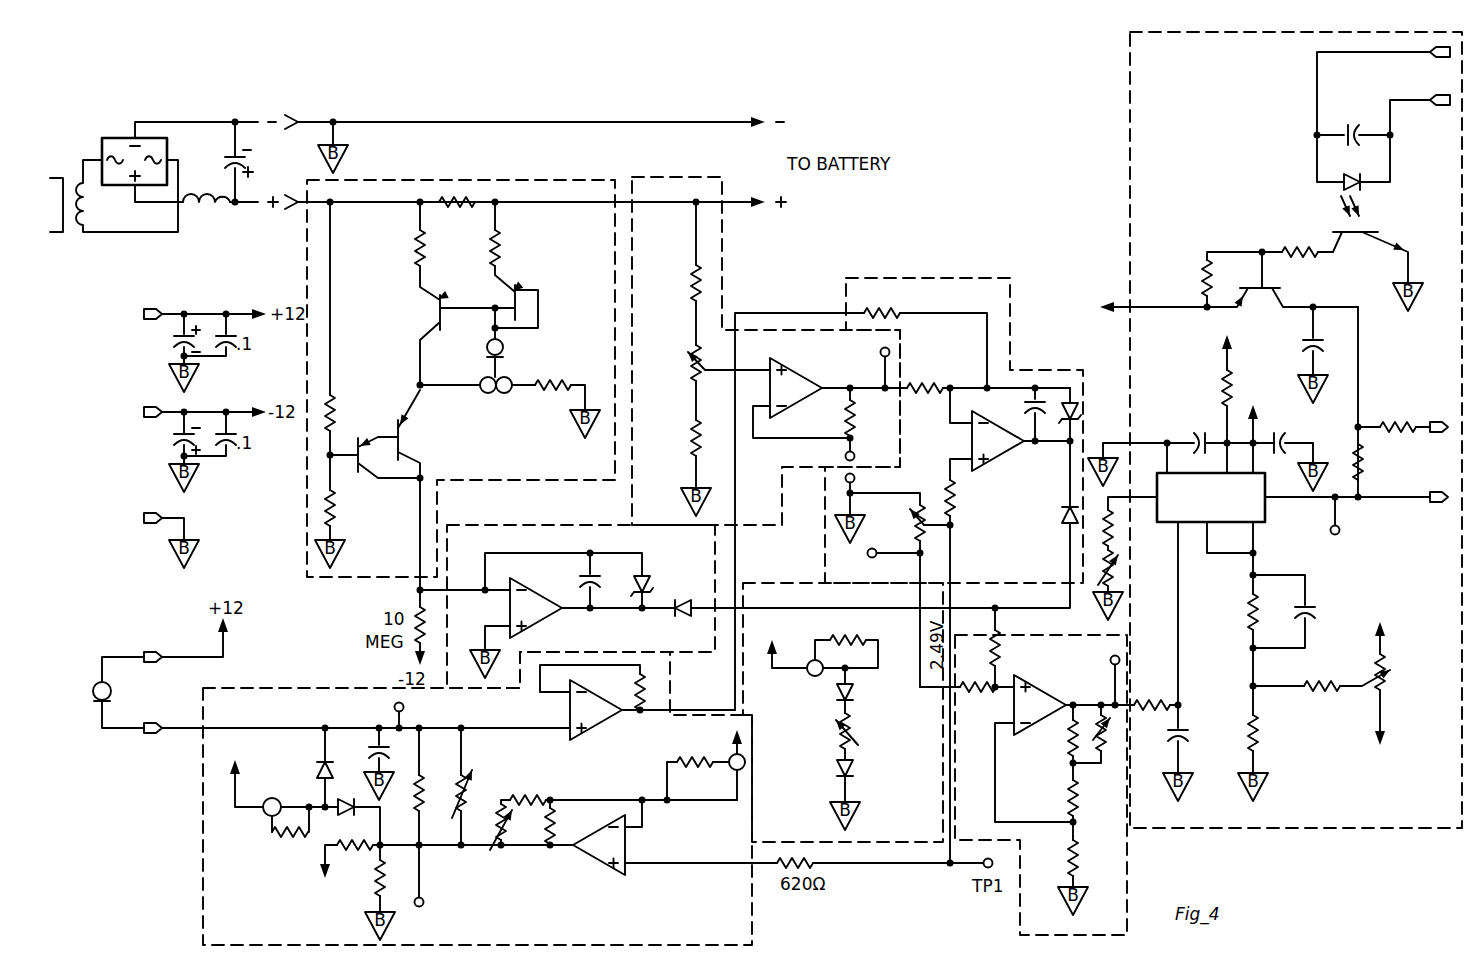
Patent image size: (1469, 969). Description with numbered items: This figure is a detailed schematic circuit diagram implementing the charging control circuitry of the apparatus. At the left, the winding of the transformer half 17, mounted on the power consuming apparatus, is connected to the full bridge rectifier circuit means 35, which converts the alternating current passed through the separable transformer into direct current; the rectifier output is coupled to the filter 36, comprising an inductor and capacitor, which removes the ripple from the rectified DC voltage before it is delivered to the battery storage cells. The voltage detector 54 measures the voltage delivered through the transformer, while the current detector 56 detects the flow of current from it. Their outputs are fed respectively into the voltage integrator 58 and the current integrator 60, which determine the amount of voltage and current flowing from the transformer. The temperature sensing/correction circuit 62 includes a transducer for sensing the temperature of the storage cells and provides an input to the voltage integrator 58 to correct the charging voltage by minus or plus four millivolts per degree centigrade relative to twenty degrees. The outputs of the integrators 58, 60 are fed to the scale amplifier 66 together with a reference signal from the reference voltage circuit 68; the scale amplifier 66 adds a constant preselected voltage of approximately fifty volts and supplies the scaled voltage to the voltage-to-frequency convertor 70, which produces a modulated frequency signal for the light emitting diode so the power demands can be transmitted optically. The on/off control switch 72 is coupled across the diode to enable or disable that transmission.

The half of separable transformer 17 is at (70, 241).
The full bridge rectifier circuit means 35 is at (118, 138).
The filter 36 is at (231, 212).
The voltage detector 54 is at (724, 283).
The current detector 56 is at (570, 481).
The voltage integrator 58 is at (980, 278).
The current integrator 60 is at (504, 524).
The temperature sensing/correction circuit 62 is at (203, 862).
The scale amplifier 66 is at (1020, 905).
The reference voltage circuit 68 is at (890, 842).
The voltage-to-frequency convertor 70 is at (1368, 828).
The on/off control switch 72 is at (1124, 205).